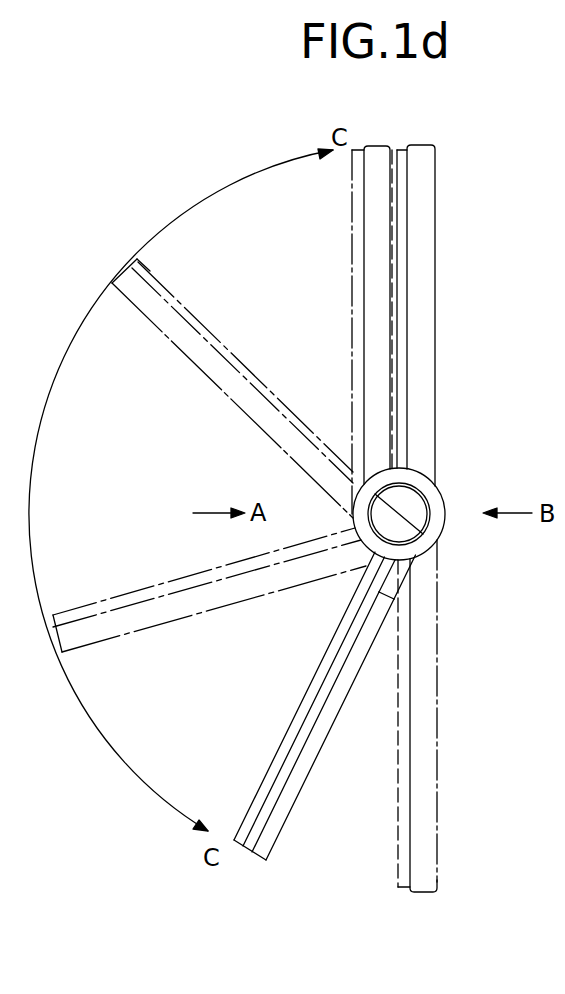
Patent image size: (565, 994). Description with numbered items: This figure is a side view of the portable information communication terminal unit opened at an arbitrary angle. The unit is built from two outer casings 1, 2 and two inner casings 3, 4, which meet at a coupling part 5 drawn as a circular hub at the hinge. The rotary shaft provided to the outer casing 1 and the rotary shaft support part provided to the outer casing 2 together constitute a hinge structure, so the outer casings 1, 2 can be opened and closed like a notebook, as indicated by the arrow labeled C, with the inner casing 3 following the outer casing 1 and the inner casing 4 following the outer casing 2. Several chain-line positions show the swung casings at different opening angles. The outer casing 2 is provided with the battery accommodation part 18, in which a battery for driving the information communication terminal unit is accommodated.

The outer casing 1 is at (418, 183).
The inner casing 3 is at (400, 240).
The coupling part 5 is at (436, 525).
The outer casing 2 is at (400, 576).
The inner casing 4 is at (300, 712).
The battery accommodation part 18 is at (343, 688).